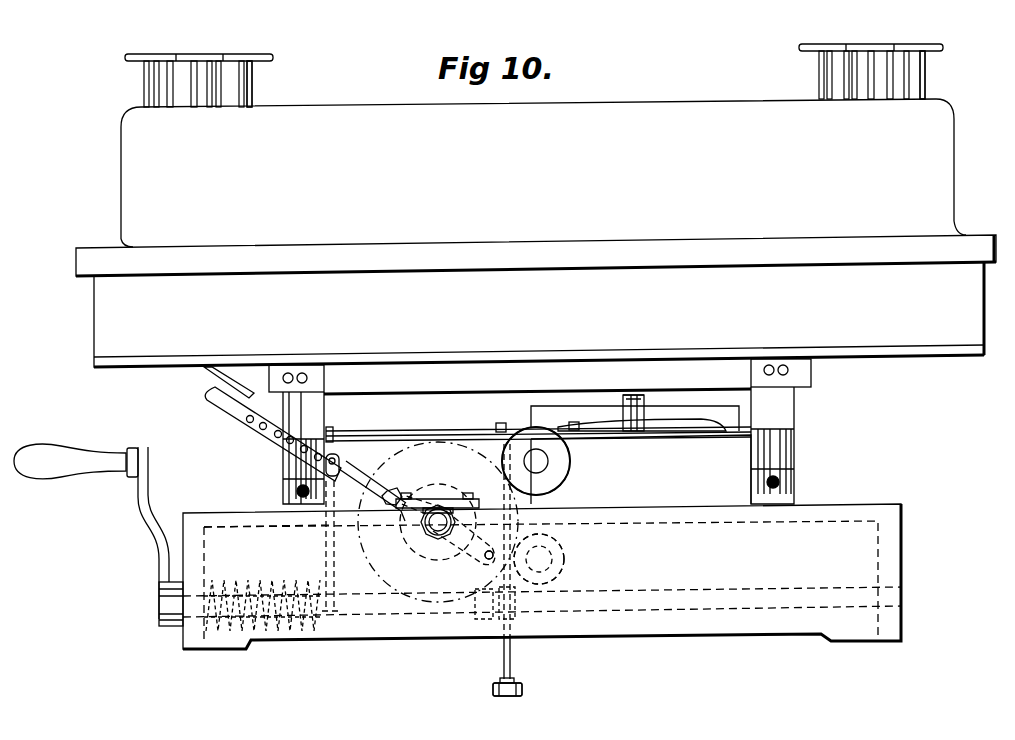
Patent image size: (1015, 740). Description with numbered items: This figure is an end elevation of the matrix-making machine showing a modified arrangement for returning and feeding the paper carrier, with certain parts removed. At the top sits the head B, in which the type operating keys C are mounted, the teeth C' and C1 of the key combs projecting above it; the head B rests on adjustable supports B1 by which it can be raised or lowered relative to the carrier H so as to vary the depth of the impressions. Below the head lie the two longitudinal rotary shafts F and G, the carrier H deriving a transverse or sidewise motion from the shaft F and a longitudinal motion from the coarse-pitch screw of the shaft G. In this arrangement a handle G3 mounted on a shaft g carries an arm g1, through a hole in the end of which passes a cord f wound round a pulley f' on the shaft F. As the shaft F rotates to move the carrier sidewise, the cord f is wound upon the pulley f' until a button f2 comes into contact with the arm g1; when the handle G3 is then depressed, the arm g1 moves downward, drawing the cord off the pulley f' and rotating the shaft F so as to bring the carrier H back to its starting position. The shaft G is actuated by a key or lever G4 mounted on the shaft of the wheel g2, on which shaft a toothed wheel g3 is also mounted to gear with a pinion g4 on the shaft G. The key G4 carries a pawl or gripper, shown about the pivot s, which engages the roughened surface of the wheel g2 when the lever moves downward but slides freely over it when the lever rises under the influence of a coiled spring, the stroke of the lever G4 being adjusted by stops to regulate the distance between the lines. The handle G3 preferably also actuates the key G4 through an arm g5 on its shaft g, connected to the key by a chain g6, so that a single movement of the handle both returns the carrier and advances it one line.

The head B is at (536, 233).
The type operating keys C is at (534, 59).
The comb tooth C' is at (266, 84).
The comb tooth C1 is at (925, 85).
The adjustable supports B1 is at (282, 458).
The key or lever G4 is at (303, 444).
The handle G3 is at (72, 470).
The longitudinal rotary shaft G is at (538, 560).
The pinion g4 is at (552, 546).
The longitudinal rotary shaft F is at (535, 462).
The pulley f' is at (544, 463).
The carrier H is at (538, 418).
The wheel g2 is at (430, 492).
The toothed wheel g3 is at (440, 560).
The pin s is at (500, 500).
The shaft g is at (380, 604).
The arm g5 is at (336, 572).
The chain g6 is at (293, 568).
The cord f is at (491, 561).
The arm g1 is at (512, 676).
The button f2 is at (492, 691).